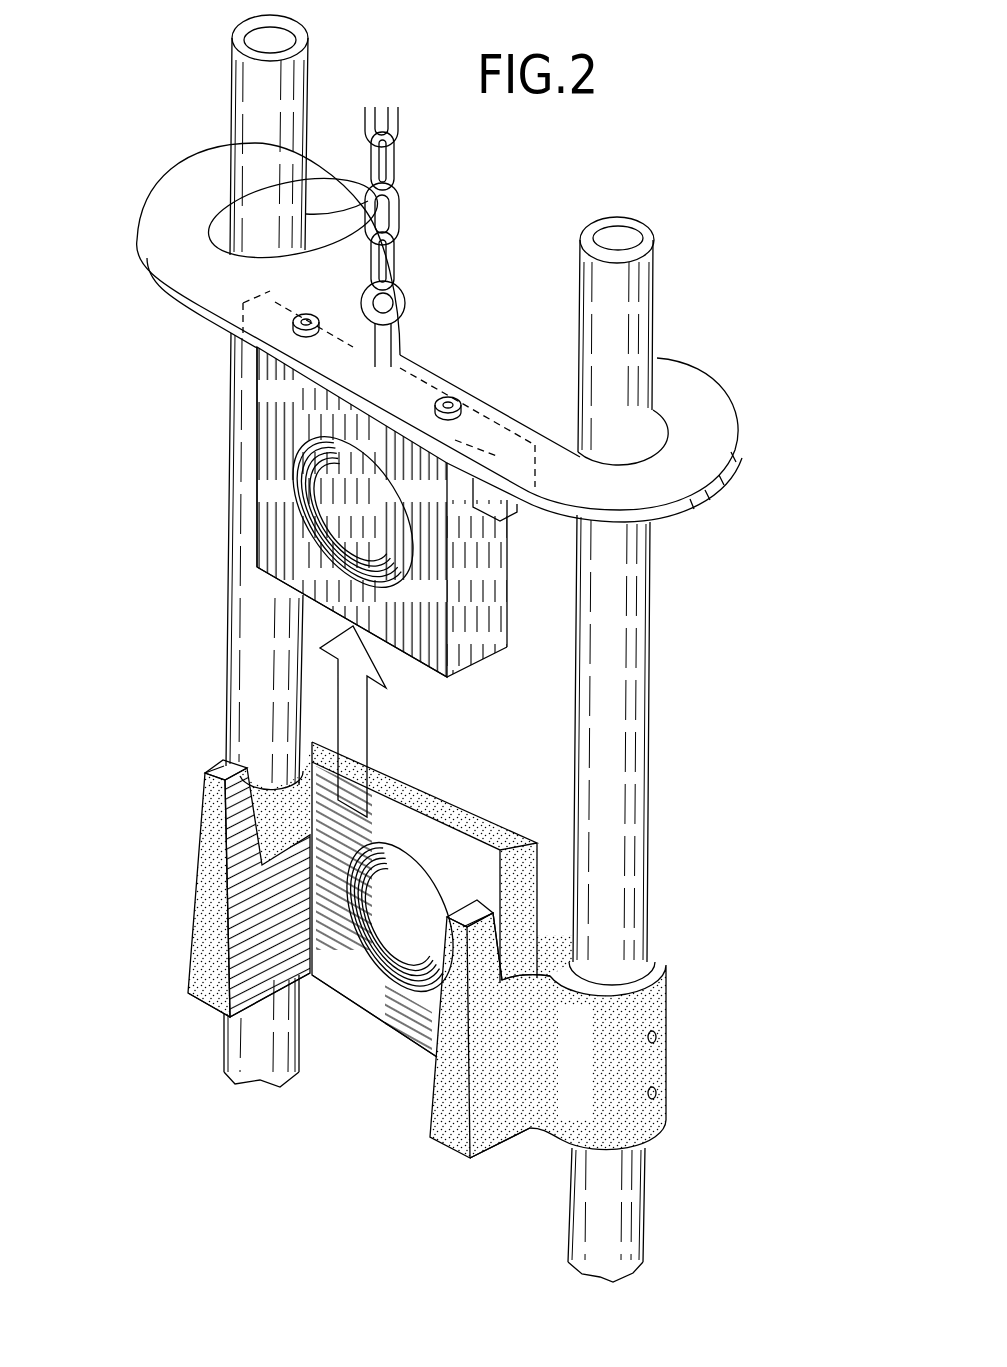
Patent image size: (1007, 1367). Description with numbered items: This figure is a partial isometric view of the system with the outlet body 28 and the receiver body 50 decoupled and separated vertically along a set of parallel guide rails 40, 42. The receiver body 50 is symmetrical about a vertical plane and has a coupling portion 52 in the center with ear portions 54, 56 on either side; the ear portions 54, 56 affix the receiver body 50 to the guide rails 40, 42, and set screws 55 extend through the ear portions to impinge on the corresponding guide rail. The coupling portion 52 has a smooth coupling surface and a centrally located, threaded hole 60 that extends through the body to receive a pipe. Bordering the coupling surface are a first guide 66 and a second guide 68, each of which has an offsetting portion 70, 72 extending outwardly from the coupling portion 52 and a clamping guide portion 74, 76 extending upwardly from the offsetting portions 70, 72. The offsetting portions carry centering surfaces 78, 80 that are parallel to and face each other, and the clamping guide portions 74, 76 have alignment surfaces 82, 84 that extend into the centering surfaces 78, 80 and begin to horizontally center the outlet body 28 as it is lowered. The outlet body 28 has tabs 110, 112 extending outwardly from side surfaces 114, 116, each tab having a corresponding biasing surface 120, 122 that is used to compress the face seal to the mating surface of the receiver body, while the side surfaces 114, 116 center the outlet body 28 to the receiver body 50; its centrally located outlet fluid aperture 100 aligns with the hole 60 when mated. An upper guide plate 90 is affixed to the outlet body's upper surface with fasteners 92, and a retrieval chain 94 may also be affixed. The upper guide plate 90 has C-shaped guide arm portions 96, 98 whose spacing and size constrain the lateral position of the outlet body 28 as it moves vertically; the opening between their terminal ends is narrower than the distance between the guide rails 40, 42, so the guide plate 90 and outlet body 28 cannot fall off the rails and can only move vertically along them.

The outlet body 28 is at (513, 577).
The guide rail 40 is at (236, 672).
The guide rail 42 is at (632, 766).
The receiver body 50 is at (369, 1154).
The coupling portion 52 is at (465, 781).
The ear portion 54 is at (216, 749).
The set screws 55 is at (670, 1048).
The ear portion 56 is at (677, 959).
The hole 60 is at (411, 918).
The first guide 66 is at (211, 1044).
The second guide 68 is at (500, 1166).
The offsetting portion 70 is at (181, 981).
The offsetting portion 72 is at (434, 1142).
The clamping guide portion 74 is at (188, 824).
The clamping guide portion 76 is at (494, 931).
The centering surface 78 is at (247, 945).
The centering surface 80 is at (435, 1081).
The alignment surface 82 is at (236, 833).
The alignment surface 84 is at (437, 943).
The upper guide plate 90 is at (415, 375).
The fasteners 92 is at (310, 315).
The retrieval chain 94 is at (395, 290).
The guide arm portion 96 is at (715, 425).
The guide arm portion 98 is at (190, 176).
The outlet fluid aperture 100 is at (376, 498).
The tab 110 is at (242, 345).
The tab 112 is at (520, 523).
The side surface 114 is at (255, 468).
The side surface 116 is at (482, 640).
The biasing surface 120 is at (245, 368).
The biasing surface 122 is at (503, 588).